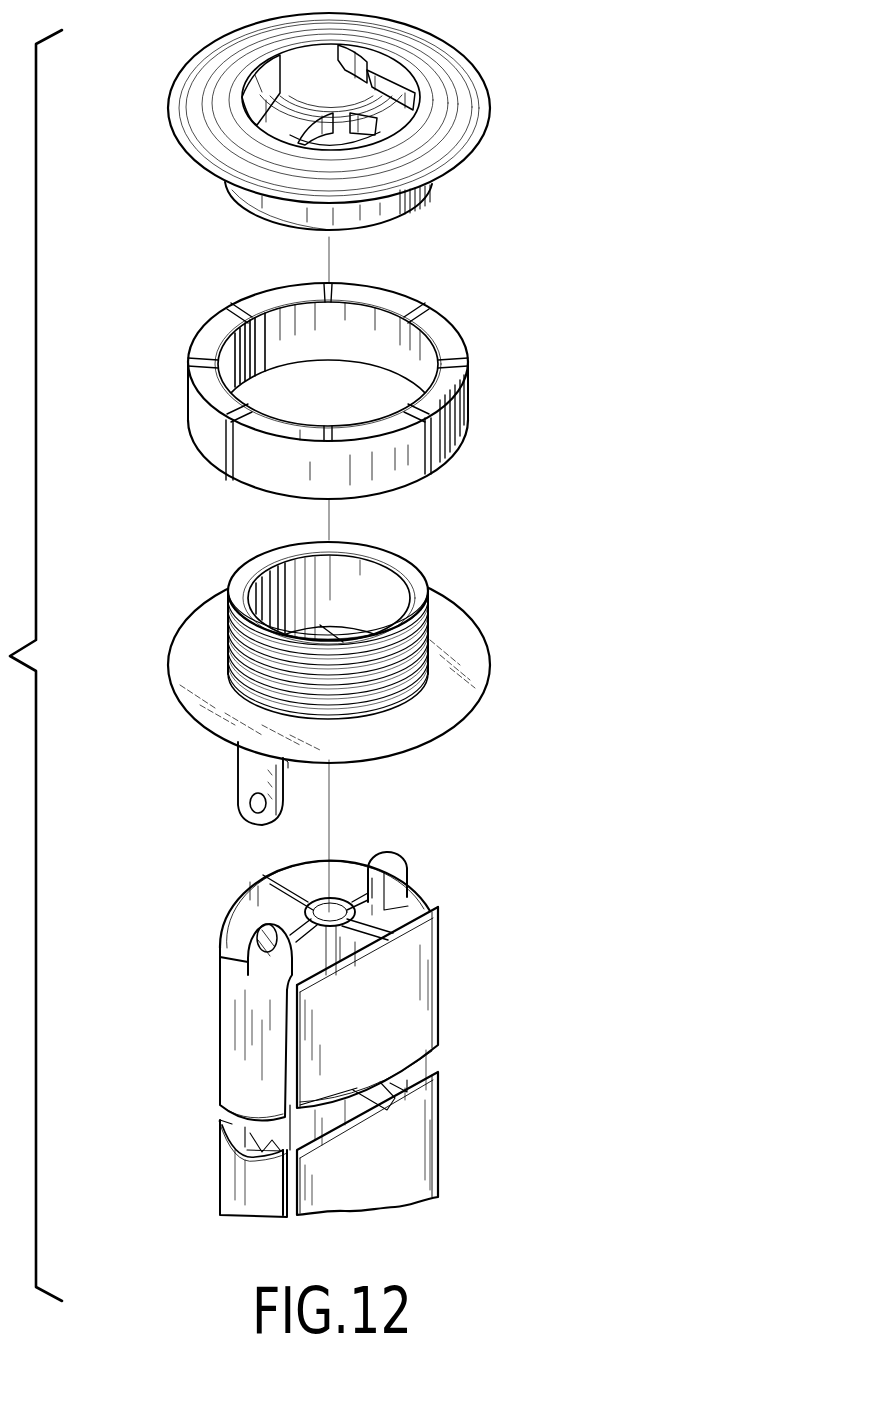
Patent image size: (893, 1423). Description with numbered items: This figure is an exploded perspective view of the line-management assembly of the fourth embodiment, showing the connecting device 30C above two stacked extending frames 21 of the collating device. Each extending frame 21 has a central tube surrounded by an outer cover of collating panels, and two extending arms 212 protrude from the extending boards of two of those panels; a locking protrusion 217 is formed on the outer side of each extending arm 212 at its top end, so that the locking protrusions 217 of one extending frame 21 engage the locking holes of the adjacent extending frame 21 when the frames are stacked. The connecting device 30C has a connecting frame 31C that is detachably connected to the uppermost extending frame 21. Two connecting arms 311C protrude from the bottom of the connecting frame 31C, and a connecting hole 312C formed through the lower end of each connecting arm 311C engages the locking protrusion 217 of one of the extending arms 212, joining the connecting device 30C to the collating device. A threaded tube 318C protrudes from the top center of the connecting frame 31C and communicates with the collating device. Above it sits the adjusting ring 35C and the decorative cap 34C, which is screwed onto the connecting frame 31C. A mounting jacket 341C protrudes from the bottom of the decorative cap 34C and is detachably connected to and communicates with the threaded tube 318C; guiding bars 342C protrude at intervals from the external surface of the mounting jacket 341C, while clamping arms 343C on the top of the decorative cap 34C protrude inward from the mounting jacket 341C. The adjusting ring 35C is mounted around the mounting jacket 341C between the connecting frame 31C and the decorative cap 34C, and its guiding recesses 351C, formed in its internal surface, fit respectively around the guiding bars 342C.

The decorative cap 34C is at (470, 86).
The clamping arms 343C is at (383, 127).
The guiding bars 342C is at (420, 200).
The mounting jacket 341C is at (368, 223).
The connecting device 30C is at (507, 393).
The guiding recesses 351C is at (253, 340).
The adjusting ring 35C is at (462, 440).
The connecting frame 31C is at (475, 668).
The threaded tube 318C is at (418, 627).
The connecting arm 311C is at (252, 769).
The connecting hole 312C is at (255, 805).
The extending frame 21 is at (476, 985).
The extending arm 212 is at (387, 877).
The locking protrusion 217 is at (267, 938).